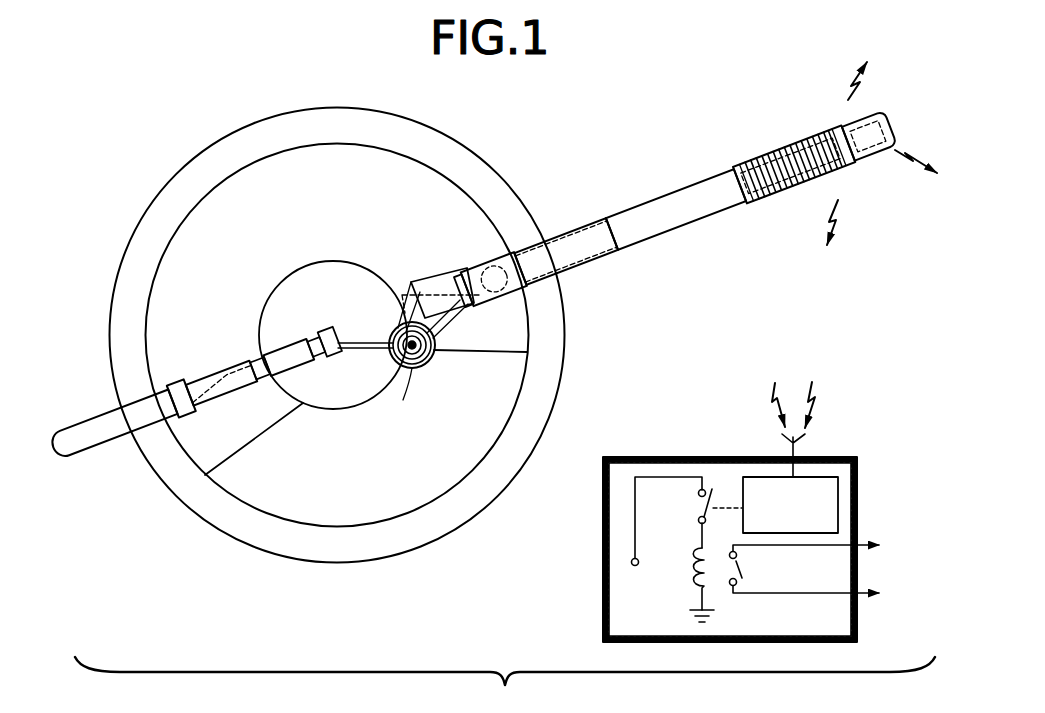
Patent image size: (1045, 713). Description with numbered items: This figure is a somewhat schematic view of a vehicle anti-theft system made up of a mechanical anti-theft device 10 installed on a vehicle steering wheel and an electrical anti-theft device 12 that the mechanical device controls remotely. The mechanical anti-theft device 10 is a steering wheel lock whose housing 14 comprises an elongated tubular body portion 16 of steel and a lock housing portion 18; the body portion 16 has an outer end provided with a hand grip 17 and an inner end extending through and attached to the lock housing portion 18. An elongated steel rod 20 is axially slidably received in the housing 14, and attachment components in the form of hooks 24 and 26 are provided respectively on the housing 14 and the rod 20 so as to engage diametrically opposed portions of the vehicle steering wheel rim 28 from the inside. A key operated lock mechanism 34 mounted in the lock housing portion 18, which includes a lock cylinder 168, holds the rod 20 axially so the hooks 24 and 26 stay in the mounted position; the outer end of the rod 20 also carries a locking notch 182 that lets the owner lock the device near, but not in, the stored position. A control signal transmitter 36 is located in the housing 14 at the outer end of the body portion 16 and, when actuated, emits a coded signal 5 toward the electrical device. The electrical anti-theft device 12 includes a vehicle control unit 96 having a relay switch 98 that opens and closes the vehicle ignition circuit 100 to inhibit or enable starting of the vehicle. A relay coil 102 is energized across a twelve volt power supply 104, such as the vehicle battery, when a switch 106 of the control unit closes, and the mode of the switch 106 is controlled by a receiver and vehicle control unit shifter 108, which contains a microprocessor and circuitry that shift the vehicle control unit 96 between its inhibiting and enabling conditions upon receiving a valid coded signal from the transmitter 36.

The mechanical anti-theft device 10 is at (656, 117).
The electrical anti-theft device 12 is at (701, 377).
The housing 14 is at (573, 222).
The elongated tubular body portion 16 is at (642, 201).
The hand grip 17 is at (825, 125).
The lock housing portion 18 is at (422, 272).
The elongated steel rod 20 is at (283, 334).
The hook 24 is at (603, 264).
The hook 26 is at (111, 452).
The vehicle steering wheel rim 28 is at (243, 116).
The key operated lock mechanism 34 is at (406, 390).
The control signal transmitter 36 is at (867, 153).
The radio frequency signals 5 is at (811, 242).
The vehicle control unit 96 is at (622, 508).
The relay switch 98 is at (750, 571).
The vehicle ignition circuit 100 is at (810, 606).
The relay coil 102 is at (690, 584).
The 12 volt power supply 104 is at (620, 573).
The switch 106 is at (689, 498).
The receiver and vehicle control unit shifter 108 is at (815, 477).
The lock cylinder 168 is at (416, 377).
The locking notch 182 is at (262, 385).